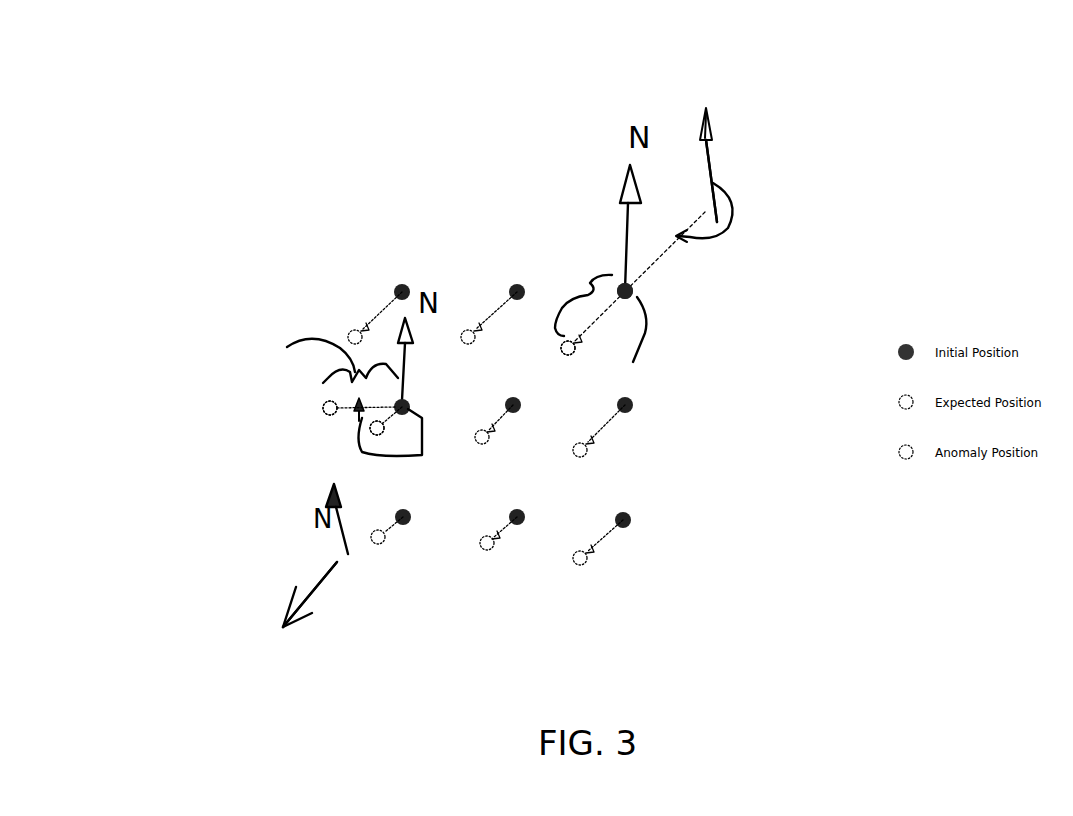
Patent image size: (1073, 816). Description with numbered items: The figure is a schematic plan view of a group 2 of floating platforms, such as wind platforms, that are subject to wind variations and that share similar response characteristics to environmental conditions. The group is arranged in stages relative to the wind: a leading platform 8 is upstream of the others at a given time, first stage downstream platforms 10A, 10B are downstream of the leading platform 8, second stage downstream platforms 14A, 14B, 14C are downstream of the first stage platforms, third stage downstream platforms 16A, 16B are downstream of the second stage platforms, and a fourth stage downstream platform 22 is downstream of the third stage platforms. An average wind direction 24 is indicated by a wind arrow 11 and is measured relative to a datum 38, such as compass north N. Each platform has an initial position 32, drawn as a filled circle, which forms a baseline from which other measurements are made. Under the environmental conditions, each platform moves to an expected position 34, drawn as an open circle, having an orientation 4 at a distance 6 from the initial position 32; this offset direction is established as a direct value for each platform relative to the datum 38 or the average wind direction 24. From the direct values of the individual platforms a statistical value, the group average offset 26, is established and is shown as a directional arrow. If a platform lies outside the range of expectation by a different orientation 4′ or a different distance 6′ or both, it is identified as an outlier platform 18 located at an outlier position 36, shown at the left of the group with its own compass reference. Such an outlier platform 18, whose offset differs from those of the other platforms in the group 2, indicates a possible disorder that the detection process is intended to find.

The group of floating platforms 2 is at (488, 146).
The orientation 4 is at (627, 243).
The outlier orientation 4′ is at (408, 357).
The distance 6 is at (583, 285).
The outlier distance 6′ is at (266, 312).
The leading platform 8 is at (604, 325).
The first stage downstream platform 10A is at (632, 412).
The first stage downstream platform 10B is at (518, 284).
The wind direction arrow 11 is at (712, 141).
The second stage downstream platform 14A is at (632, 519).
The second stage downstream platform 14B is at (518, 398).
The second stage downstream platform 14C is at (403, 283).
The third stage downstream platform 16A is at (525, 515).
The third stage downstream platform 16B is at (422, 445).
The outlier platform 18 is at (328, 416).
The fourth stage downstream platform 22 is at (410, 518).
The average wind direction 24 is at (788, 178).
The group average offset 26 is at (350, 517).
The initial position 32 is at (633, 293).
The expected position 34 is at (572, 352).
The outlier position 36 is at (323, 405).
The datum 38 is at (713, 157).